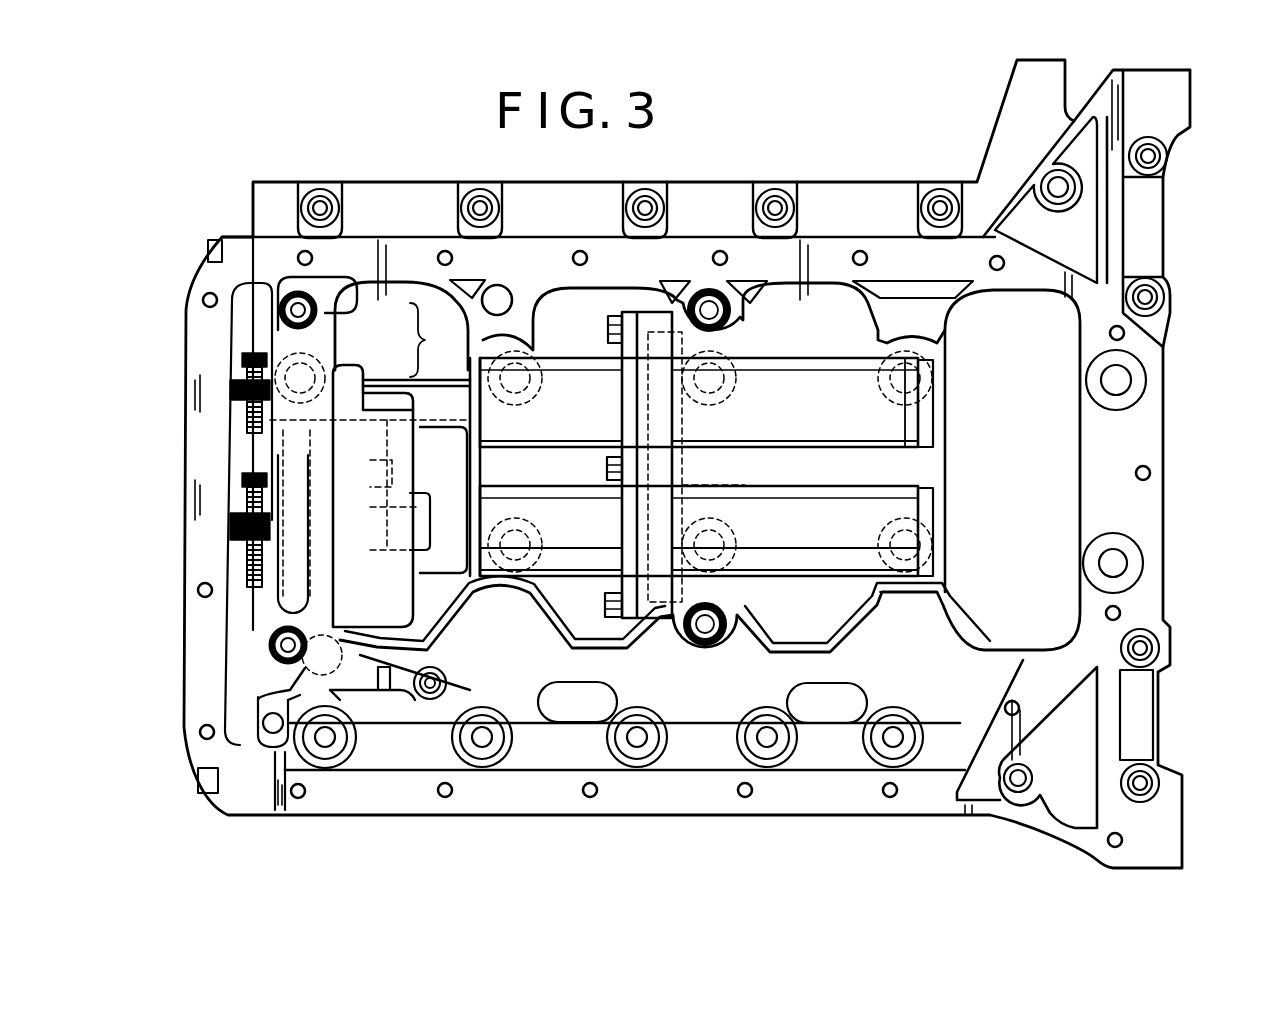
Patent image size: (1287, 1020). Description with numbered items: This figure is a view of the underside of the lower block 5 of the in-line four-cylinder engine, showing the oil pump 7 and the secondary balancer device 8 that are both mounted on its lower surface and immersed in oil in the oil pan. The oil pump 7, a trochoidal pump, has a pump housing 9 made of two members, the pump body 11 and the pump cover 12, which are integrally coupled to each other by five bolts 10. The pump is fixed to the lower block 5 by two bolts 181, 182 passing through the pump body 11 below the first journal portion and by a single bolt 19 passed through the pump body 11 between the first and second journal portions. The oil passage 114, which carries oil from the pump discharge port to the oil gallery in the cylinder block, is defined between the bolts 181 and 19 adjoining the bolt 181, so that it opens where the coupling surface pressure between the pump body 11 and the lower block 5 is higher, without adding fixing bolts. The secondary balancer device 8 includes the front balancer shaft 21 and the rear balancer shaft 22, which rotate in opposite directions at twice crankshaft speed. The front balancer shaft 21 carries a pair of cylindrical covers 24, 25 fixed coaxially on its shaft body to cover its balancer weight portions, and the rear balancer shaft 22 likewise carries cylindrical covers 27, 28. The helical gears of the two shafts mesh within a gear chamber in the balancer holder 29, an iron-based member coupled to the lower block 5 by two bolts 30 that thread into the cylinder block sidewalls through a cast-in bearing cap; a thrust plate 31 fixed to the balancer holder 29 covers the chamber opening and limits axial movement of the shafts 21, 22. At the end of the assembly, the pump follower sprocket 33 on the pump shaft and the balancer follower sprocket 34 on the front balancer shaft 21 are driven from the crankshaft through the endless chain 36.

The lower block 5 is at (1170, 285).
The oil pump 7 is at (433, 588).
The secondary balancer device 8 is at (830, 600).
The pump housing 9 is at (428, 340).
The bolts 10 is at (395, 470).
The pump body 11 is at (317, 337).
The pump cover 12 is at (387, 413).
The oil passage 114 is at (348, 745).
The bolt 181 is at (270, 645).
The bolt 182 is at (280, 285).
The bolt 19 is at (448, 685).
The front balancer shaft 21 is at (772, 360).
The rear balancer shaft 22 is at (776, 486).
The cylindrical cover 24 is at (571, 358).
The cylindrical cover 25 is at (840, 388).
The cylindrical cover 27 is at (571, 578).
The cylindrical cover 28 is at (797, 578).
The balancer holder 29 is at (727, 416).
The bolts 30 is at (707, 310).
The thrust plate 31 is at (622, 388).
The pump follower sprocket 33 is at (240, 487).
The balancer follower sprocket 34 is at (230, 410).
The endless chain 36 is at (248, 355).